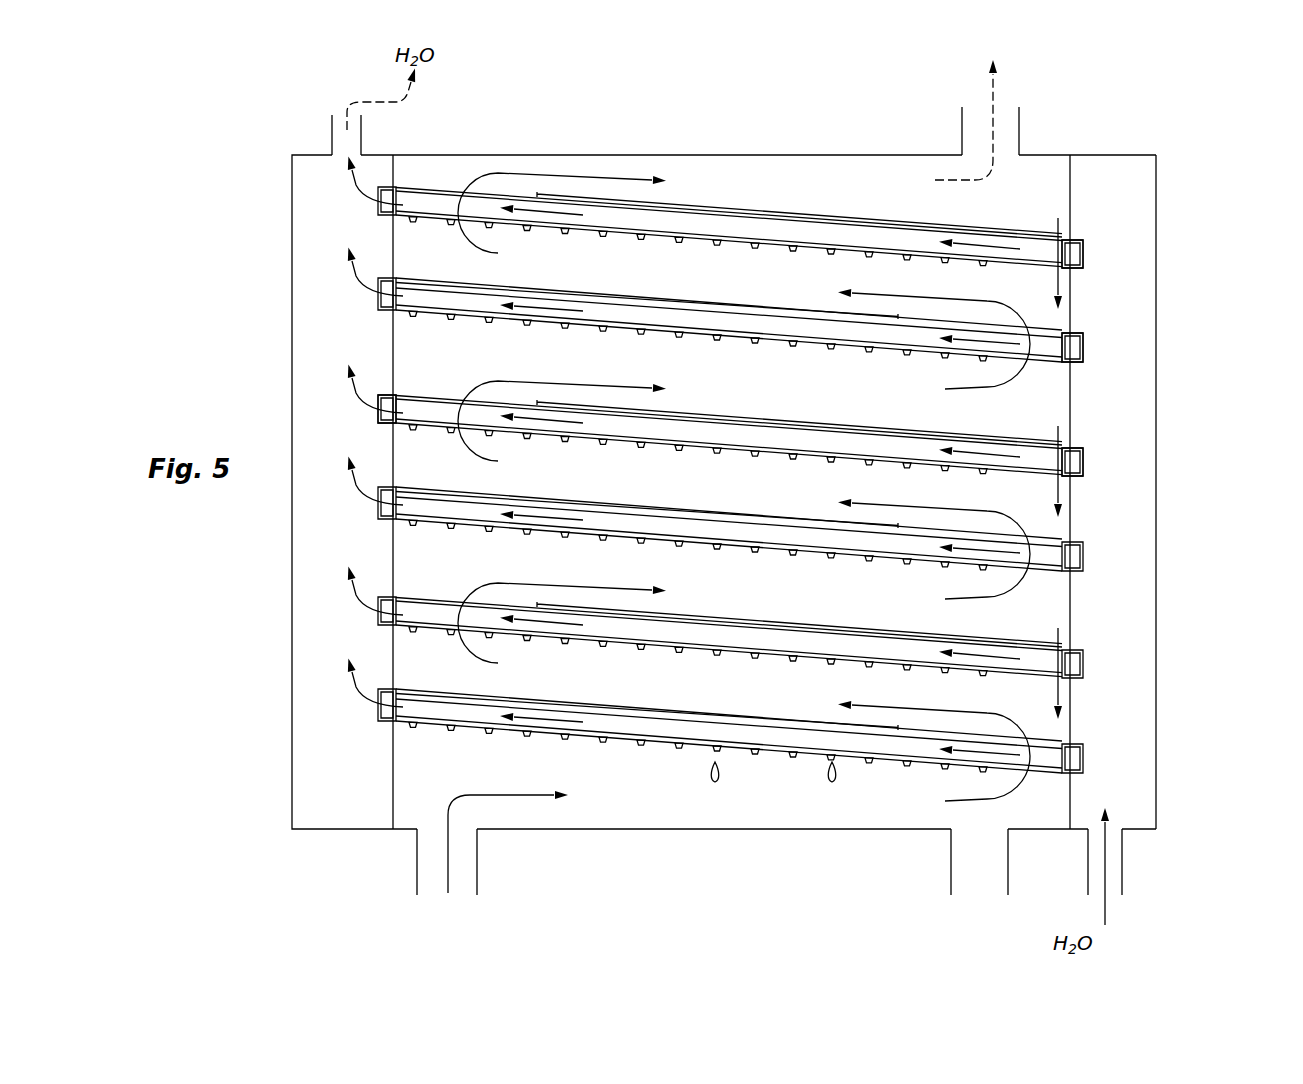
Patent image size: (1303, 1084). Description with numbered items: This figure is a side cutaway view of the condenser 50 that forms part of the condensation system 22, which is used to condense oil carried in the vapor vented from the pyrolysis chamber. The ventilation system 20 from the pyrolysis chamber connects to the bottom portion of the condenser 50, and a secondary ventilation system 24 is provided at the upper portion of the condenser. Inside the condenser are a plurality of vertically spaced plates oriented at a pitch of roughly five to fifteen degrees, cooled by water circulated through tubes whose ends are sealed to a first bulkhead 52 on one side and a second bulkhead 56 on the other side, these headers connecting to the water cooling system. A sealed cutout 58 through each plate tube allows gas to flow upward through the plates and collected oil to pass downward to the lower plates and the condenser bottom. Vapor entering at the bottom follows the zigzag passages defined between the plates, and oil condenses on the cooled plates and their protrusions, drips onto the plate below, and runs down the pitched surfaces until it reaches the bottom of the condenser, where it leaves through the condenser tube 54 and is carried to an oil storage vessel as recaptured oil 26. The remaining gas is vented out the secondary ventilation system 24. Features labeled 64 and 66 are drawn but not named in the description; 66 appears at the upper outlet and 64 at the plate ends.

The ventilation system 20 is at (456, 876).
The condensation system 22 is at (1170, 556).
The secondary ventilation system 24 is at (1052, 643).
The recaptured oil 26 is at (833, 782).
The condenser 50 is at (1157, 268).
The first bulkhead 52 is at (325, 348).
The condenser tube 54 is at (998, 867).
The second bulkhead 56 is at (1125, 398).
The sealed cutout 58 is at (420, 395).
The tray lip 64 is at (1050, 222).
The water outlet 66 is at (1021, 120).